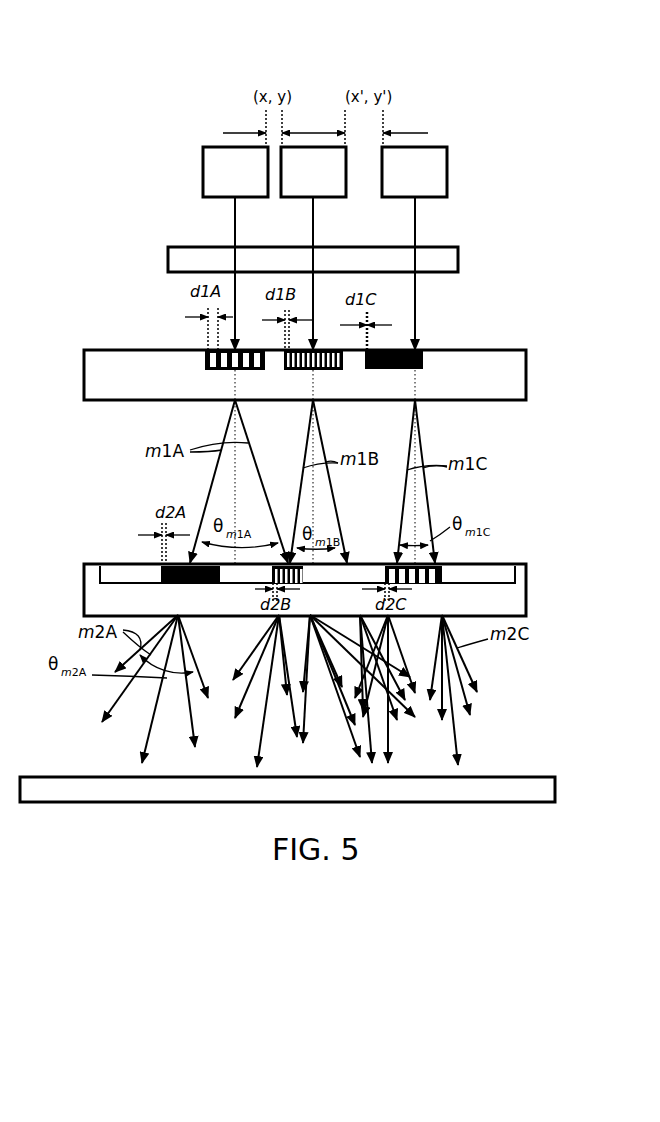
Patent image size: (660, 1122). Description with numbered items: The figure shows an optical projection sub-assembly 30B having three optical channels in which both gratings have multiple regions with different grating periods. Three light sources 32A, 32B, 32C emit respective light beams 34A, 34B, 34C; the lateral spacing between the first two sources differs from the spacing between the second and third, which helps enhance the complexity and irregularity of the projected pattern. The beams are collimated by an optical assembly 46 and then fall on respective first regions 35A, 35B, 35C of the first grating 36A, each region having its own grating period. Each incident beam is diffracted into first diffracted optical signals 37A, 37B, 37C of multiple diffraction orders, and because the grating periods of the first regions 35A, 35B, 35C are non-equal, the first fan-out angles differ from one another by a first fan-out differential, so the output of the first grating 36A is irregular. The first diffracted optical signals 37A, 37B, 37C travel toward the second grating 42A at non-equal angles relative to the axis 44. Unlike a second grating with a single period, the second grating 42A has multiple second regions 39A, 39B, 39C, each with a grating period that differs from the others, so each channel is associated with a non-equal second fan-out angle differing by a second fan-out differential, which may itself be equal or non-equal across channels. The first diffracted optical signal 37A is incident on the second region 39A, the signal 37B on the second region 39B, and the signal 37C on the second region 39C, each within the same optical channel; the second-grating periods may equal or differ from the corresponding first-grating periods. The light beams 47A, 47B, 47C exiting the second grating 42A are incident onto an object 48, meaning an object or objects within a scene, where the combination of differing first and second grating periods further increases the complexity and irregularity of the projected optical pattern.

The optical projection sub-assembly 30B is at (481, 88).
The light source 32A is at (235, 172).
The light source 32B is at (313, 172).
The light source 32C is at (414, 172).
The light beam 34A is at (234, 216).
The light beam 34B is at (312, 218).
The light beam 34C is at (416, 224).
The optical assembly 46 is at (459, 258).
The first region 35A is at (205, 362).
The first region 35B is at (336, 369).
The first region 35C is at (423, 358).
The first grating 36A is at (527, 377).
The first diffracted optical signal 37A is at (228, 421).
The first diffracted optical signal 37B is at (306, 422).
The first diffracted optical signal 37C is at (423, 443).
The axis 44 is at (234, 500).
The second region 39A is at (160, 570).
The second region 39B is at (305, 573).
The second region 39C is at (442, 572).
The second grating 42A is at (527, 592).
The light beam 47A is at (118, 663).
The light beam 47B is at (386, 746).
The light beam 47C is at (457, 665).
The object 48 is at (556, 783).